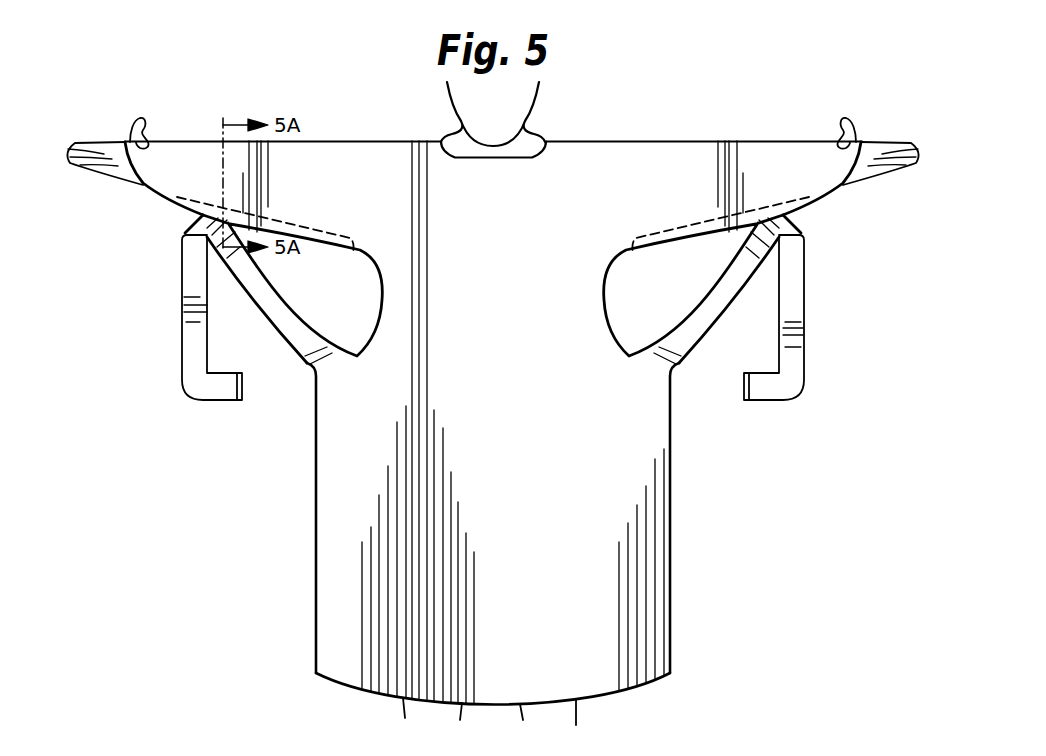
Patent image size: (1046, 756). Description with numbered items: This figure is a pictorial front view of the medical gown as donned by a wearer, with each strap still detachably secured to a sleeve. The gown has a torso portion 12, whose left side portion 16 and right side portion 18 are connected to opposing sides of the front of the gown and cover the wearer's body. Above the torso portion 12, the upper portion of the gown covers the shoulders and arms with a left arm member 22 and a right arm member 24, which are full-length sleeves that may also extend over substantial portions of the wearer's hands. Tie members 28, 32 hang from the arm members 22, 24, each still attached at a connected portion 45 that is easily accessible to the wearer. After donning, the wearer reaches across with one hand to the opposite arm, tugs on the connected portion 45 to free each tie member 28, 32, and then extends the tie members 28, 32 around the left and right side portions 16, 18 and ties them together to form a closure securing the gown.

The torso portion 12 is at (529, 453).
The left side portion 16 is at (657, 410).
The right side portion 18 is at (325, 462).
The left arm member 22 is at (648, 152).
The right arm member 24 is at (382, 153).
The tie member 28 is at (798, 293).
The tie member 32 is at (193, 372).
The connected portion 45 is at (203, 215).